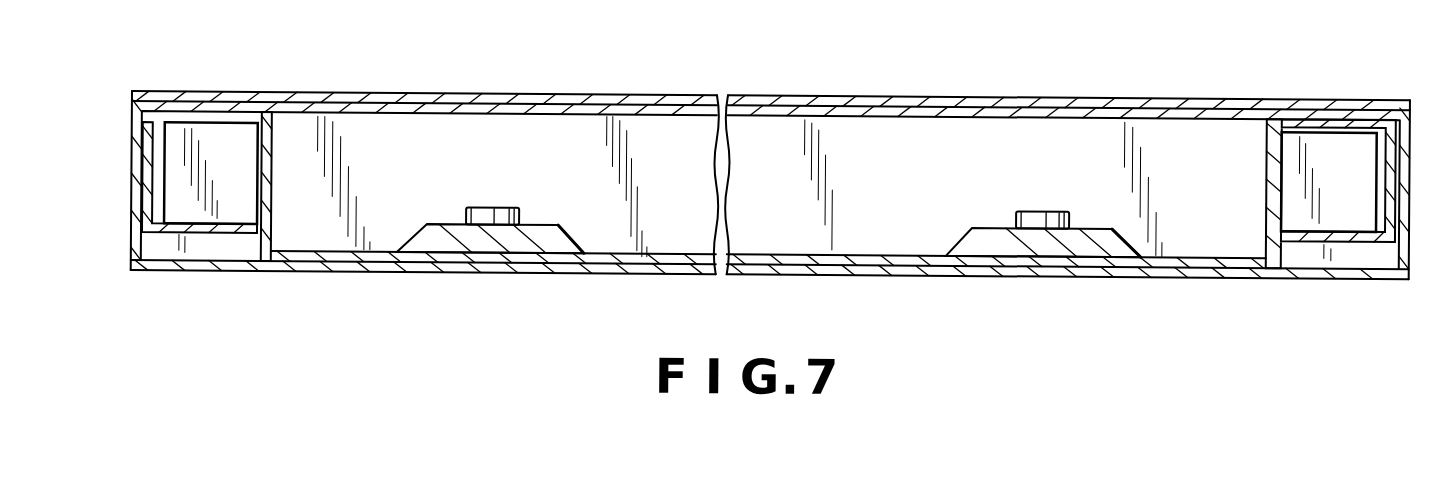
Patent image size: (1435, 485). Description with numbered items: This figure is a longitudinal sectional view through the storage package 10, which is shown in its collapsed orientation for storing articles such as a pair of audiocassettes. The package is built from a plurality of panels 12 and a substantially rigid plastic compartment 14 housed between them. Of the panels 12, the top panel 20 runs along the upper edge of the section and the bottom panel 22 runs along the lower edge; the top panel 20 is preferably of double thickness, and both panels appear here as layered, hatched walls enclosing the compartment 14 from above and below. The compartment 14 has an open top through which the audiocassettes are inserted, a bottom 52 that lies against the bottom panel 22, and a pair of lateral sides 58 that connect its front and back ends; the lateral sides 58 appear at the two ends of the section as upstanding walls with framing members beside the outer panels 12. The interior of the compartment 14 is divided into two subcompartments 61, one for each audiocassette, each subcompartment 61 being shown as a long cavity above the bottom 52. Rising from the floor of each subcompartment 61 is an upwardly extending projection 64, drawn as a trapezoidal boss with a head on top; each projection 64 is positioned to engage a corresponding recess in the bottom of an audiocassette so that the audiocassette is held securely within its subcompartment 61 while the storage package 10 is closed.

The storage package 10 is at (573, 74).
The plurality of panels 12 is at (1195, 90).
The compartment 14 is at (277, 134).
The top panel 20 is at (932, 87).
The bottom panel 22 is at (1150, 271).
The bottom 52 is at (303, 263).
The lateral sides 58 is at (129, 240).
The subcompartment 61 is at (340, 255).
The upwardly extending projections 64 is at (490, 207).